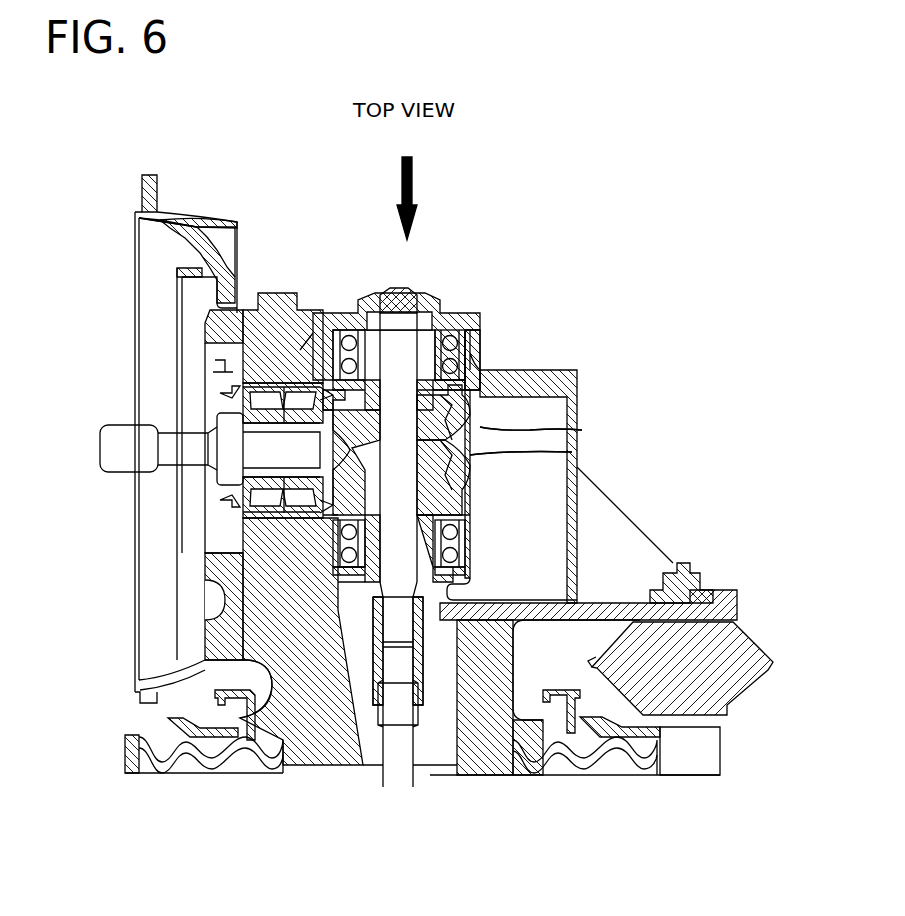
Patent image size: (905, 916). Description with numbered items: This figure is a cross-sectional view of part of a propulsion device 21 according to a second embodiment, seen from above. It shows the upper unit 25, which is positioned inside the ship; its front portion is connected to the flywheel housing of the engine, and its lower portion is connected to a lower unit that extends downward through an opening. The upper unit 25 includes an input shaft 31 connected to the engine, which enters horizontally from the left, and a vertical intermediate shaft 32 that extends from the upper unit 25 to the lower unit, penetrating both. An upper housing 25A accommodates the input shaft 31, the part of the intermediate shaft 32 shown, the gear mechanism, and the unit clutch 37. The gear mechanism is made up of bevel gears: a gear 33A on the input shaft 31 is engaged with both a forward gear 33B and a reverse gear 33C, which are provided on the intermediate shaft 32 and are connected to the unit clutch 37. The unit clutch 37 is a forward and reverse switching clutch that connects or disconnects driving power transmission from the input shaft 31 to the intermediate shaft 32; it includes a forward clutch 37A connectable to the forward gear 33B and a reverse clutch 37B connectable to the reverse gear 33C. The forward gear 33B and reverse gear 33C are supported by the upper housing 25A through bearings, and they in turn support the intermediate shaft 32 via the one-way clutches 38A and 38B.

The propulsion device 21 is at (750, 237).
The upper unit 25 is at (638, 345).
The upper housing 25A is at (512, 362).
The input shaft 31 is at (297, 350).
The intermediate shaft 32 is at (410, 575).
The gear 33A is at (337, 333).
The forward gear 33B is at (466, 465).
The reverse gear 33C is at (460, 398).
The unit clutch 37 is at (655, 408).
The forward clutch 37A is at (572, 452).
The reverse clutch 37B is at (582, 430).
The one-way clutch 38A is at (467, 540).
The one-way clutch 38B is at (443, 333).